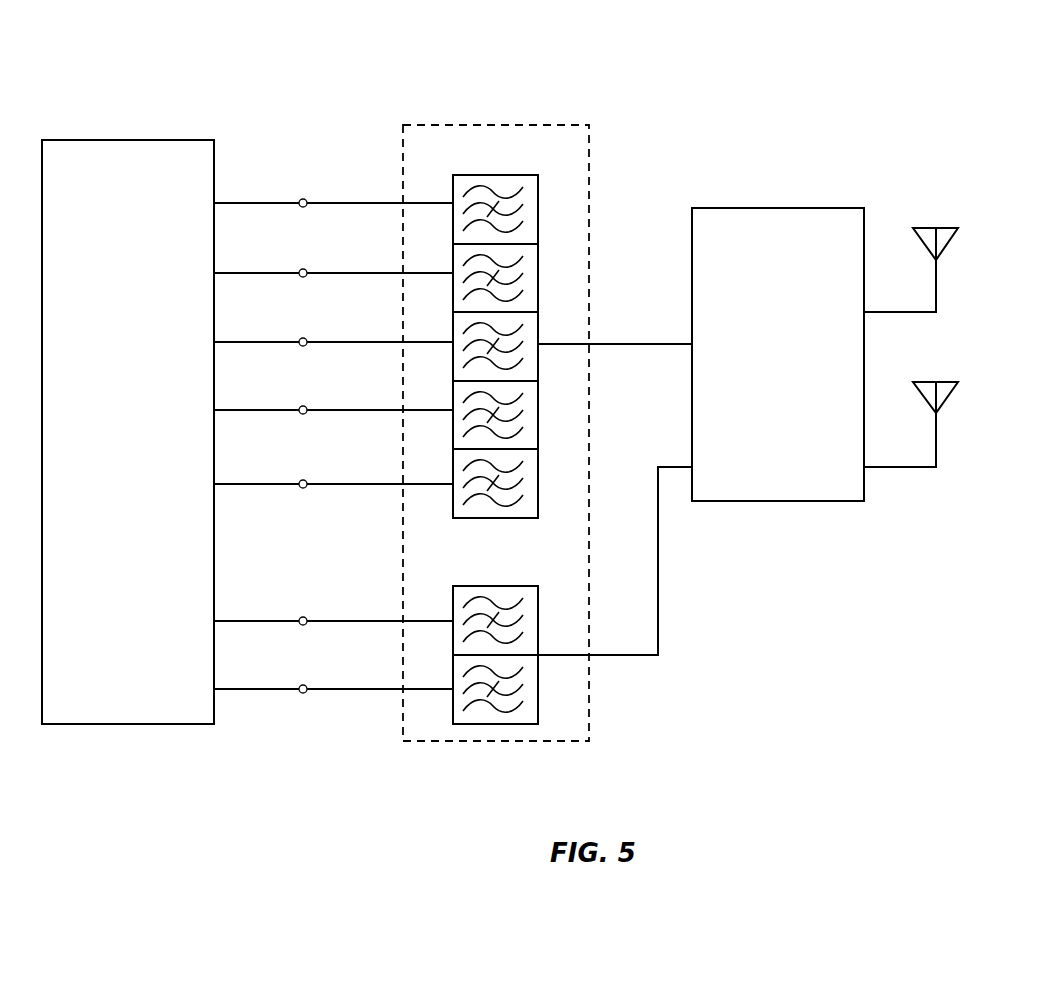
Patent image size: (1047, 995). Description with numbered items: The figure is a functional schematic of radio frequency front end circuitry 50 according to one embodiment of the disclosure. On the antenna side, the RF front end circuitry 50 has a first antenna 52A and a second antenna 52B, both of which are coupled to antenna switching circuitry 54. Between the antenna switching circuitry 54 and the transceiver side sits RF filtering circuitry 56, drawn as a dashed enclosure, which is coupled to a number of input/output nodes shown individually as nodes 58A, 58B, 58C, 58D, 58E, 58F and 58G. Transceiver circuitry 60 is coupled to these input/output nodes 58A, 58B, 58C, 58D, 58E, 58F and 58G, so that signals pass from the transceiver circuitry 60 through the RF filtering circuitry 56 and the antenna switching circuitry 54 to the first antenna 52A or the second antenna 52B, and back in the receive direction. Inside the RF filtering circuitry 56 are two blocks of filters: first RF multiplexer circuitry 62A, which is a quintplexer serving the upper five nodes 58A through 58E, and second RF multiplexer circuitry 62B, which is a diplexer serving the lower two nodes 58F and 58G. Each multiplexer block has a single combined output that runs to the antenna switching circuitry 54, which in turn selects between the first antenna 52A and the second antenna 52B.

The RF front end circuitry 50 is at (784, 83).
The first antenna 52A is at (945, 226).
The second antenna 52B is at (945, 380).
The antenna switching circuitry 54 is at (778, 354).
The RF filtering circuitry 56 is at (435, 742).
The input/output node 58A is at (305, 198).
The input/output node 58B is at (305, 268).
The input/output node 58C is at (305, 337).
The input/output node 58D is at (305, 405).
The input/output node 58E is at (305, 479).
The input/output node 58F is at (305, 616).
The input/output node 58G is at (305, 684).
The transceiver circuitry 60 is at (128, 432).
The first RF multiplexer circuitry 62A is at (508, 175).
The second RF multiplexer circuitry 62B is at (505, 586).